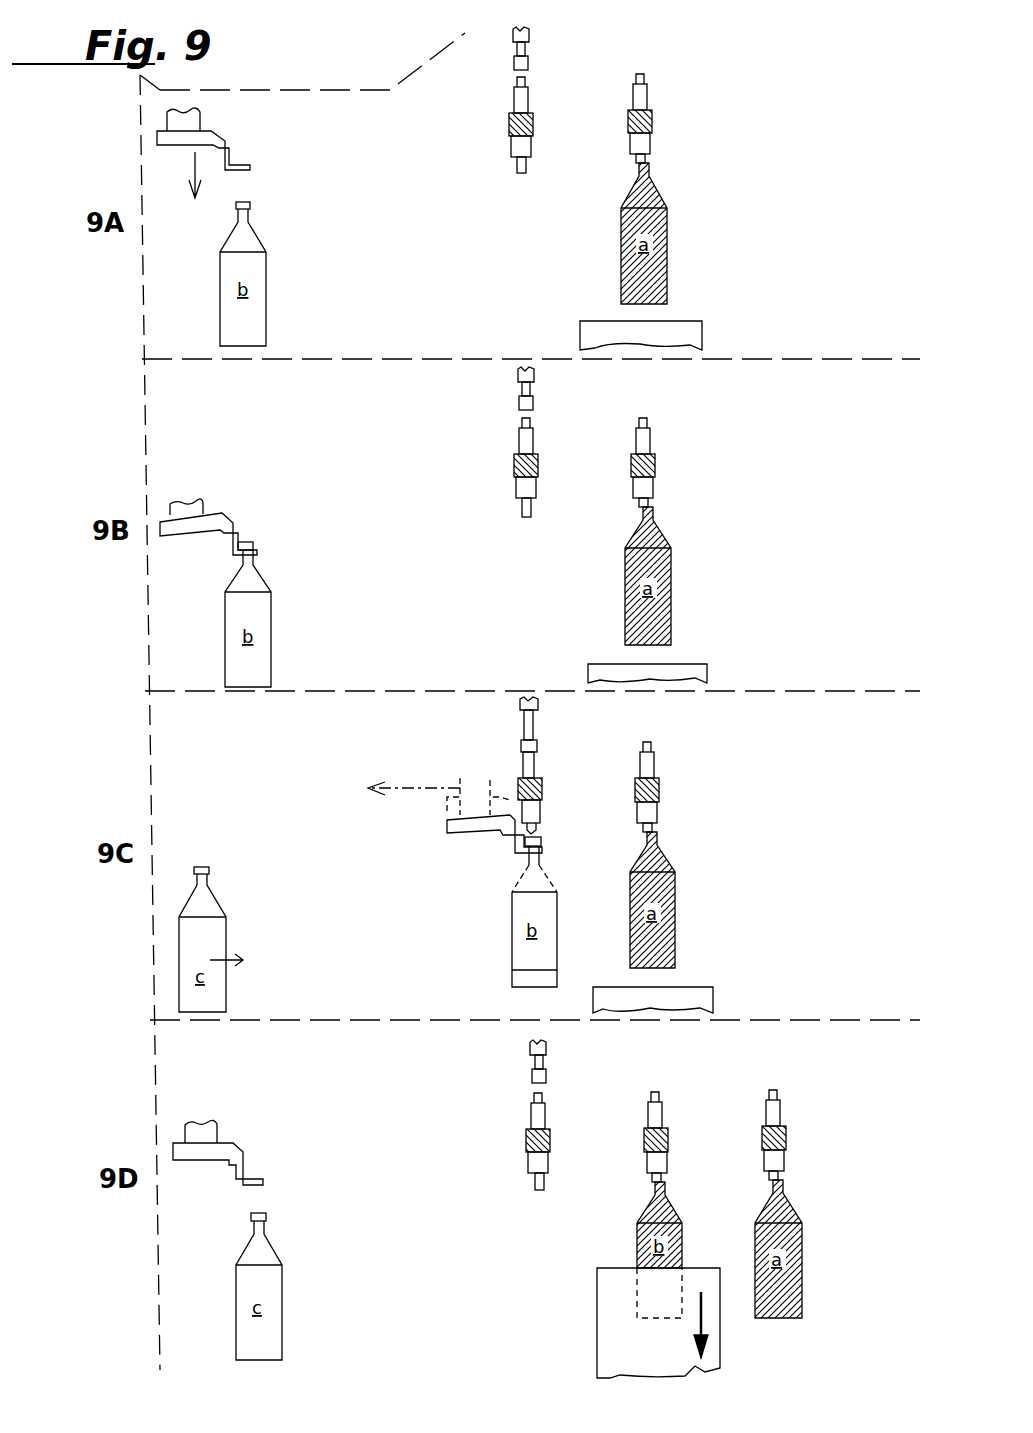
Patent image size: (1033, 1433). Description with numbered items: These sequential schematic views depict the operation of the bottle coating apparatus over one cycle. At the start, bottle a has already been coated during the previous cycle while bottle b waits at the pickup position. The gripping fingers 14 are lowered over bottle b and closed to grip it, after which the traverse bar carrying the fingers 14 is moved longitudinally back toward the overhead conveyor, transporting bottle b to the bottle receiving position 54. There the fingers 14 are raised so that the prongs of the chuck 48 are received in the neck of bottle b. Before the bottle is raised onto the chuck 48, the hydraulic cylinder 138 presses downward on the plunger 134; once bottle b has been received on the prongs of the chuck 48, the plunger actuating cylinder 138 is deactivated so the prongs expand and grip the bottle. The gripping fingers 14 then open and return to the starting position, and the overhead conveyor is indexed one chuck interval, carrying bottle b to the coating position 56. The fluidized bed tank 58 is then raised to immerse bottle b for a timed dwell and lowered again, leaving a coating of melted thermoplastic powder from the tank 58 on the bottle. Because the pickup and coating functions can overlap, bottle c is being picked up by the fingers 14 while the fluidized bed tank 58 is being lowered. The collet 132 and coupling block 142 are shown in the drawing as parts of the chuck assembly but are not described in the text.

In FIG. 9A, the gripping fingers 14 is at (237, 167).
In FIG. 9B, the gripping fingers 14 is at (255, 552).
In FIG. 9C, the gripping fingers 14 is at (542, 856).
In FIG. 9D, the gripping fingers 14 is at (257, 1181).
In FIG. 9A, the chuck 48 is at (516, 148).
In FIG. 9B, the chuck 48 is at (522, 488).
In FIG. 9C, the chuck 48 is at (540, 813).
In FIG. 9A, the bottle receiving position 54 is at (531, 24).
In FIG. 9A, the coating position 56 is at (648, 24).
In FIG. 9A, the fluidized bed tank 58 is at (700, 332).
In FIG. 9B, the fluidized bed tank 58 is at (700, 670).
In FIG. 9C, the fluidized bed tank 58 is at (697, 995).
In FIG. 9D, the fluidized bed tank 58 is at (614, 1355).
In FIG. 9A, the collet 132 is at (511, 127).
In FIG. 9C, the collet 132 is at (542, 791).
In FIG. 9D, the collet 132 is at (645, 1145).
In FIG. 9C, the plunger 134 is at (534, 766).
In FIG. 9A, the hydraulic cylinder 138 is at (530, 33).
In FIG. 9C, the hydraulic cylinder 138 is at (520, 704).
In FIG. 9D, the hydraulic cylinder 138 is at (547, 1046).
In FIG. 9A, the coupling block 142 is at (513, 64).
In FIG. 9C, the coupling block 142 is at (537, 746).